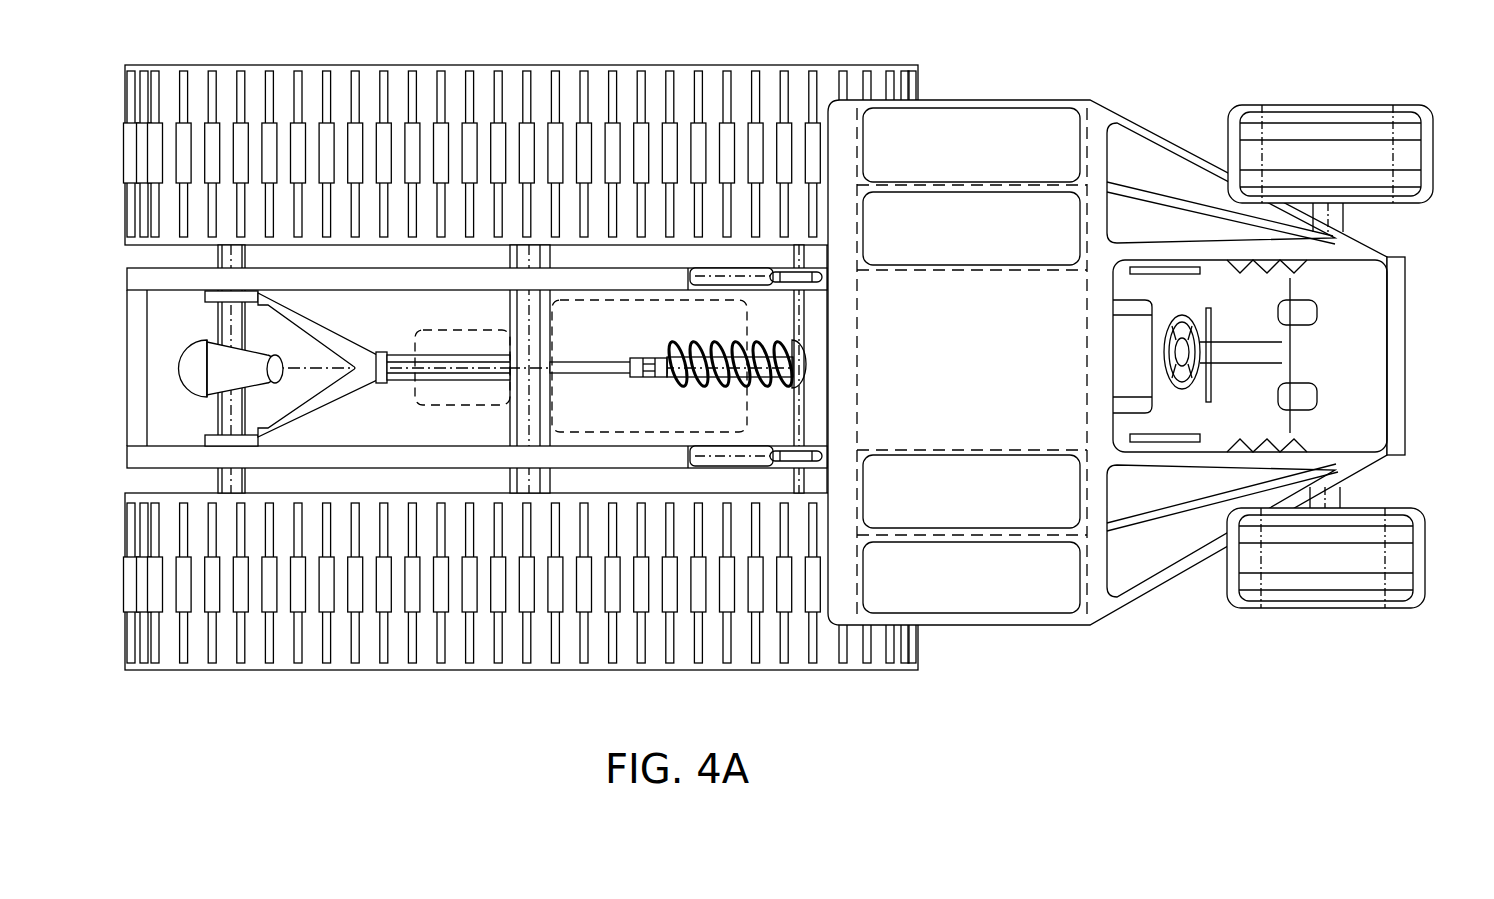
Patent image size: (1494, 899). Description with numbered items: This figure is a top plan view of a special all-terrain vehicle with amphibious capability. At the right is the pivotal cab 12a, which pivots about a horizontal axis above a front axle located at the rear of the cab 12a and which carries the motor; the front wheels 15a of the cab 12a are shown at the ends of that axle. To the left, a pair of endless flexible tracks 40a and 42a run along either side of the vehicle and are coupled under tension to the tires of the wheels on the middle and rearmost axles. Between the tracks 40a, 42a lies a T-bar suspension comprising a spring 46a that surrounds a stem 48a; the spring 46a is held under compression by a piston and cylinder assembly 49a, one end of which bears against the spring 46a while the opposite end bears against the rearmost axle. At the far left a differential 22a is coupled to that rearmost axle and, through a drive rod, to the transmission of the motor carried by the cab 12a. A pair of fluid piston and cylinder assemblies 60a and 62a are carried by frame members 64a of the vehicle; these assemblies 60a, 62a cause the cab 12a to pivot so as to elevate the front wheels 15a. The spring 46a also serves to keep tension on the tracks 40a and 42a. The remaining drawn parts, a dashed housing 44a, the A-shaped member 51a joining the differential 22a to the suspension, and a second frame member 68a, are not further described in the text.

The pivotal cab 12a is at (1372, 458).
The front wheels 15a is at (1388, 200).
The differential 22a is at (206, 374).
The endless flexible track 40a is at (452, 80).
The endless flexible track 42a is at (508, 665).
The coupling housing 44a is at (639, 403).
The spring 46a is at (800, 392).
The stem 48a is at (768, 338).
The piston and cylinder assembly 49a is at (569, 367).
The A-frame tongue 51a is at (330, 400).
The fluid piston and cylinder assembly 60a is at (757, 284).
The fluid piston and cylinder assembly 62a is at (747, 448).
The frame members 64a is at (658, 281).
The second frame member 68a is at (570, 457).